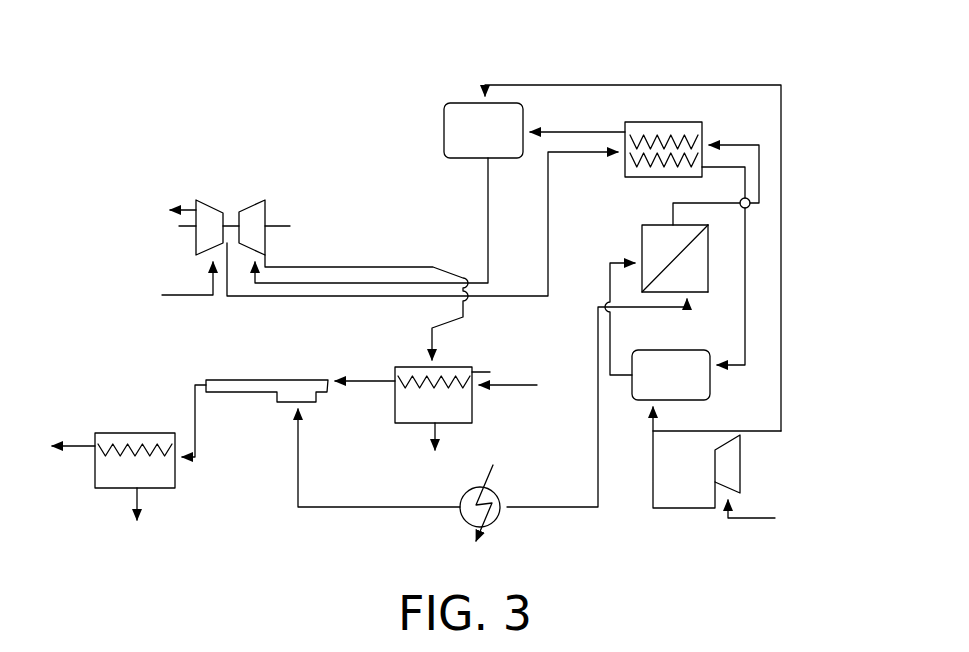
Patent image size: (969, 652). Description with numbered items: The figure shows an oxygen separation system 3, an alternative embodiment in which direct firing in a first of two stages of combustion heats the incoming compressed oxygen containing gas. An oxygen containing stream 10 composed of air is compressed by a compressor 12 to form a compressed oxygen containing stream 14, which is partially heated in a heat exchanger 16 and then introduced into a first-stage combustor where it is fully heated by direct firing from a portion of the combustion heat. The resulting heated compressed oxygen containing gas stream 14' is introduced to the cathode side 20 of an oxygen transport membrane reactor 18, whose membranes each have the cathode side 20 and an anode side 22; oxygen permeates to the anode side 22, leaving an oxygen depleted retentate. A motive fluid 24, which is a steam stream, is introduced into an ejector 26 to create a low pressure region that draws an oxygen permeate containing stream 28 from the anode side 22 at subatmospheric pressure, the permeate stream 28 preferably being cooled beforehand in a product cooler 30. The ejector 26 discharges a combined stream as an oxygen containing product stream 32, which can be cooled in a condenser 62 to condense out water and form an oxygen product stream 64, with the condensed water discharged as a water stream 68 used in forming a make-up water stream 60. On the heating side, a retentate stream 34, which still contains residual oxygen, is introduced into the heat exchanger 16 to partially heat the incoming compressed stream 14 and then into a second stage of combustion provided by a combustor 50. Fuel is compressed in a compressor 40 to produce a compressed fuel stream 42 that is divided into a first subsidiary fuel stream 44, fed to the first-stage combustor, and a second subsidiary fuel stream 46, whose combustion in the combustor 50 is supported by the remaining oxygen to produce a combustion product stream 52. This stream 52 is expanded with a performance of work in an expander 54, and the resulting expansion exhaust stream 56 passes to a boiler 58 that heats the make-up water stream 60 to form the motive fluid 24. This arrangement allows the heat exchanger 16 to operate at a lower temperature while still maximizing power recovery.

The oxygen separation system 3 is at (367, 136).
The oxygen containing stream 10 is at (188, 297).
The compressor 12 is at (210, 213).
The compressed oxygen containing stream 14 is at (422, 248).
The heated compressed oxygen containing gas stream 14' is at (635, 319).
The heat exchanger 16 is at (680, 122).
The oxygen transport membrane reactor 18 is at (642, 237).
The cathode side 20 is at (652, 232).
The anode side 22 is at (705, 263).
The motive fluid 24 is at (363, 378).
The ejector 26 is at (252, 385).
The oxygen permeate containing stream 28 is at (600, 470).
The product cooler 30 is at (465, 522).
The oxygen containing product stream 32 is at (193, 402).
The retentate stream 34 is at (673, 222).
The compressor 40 is at (732, 467).
The compressed fuel stream 42 is at (672, 510).
The first subsidiary fuel stream 44 is at (653, 431).
The second subsidiary fuel stream 46 is at (785, 392).
The combustor 50 is at (458, 120).
The combustion product stream 52 is at (487, 207).
The expander 54 is at (251, 210).
The expansion exhaust stream 56 is at (352, 267).
The boiler 58 is at (403, 425).
The make-up water stream 60 is at (518, 385).
The condenser 62 is at (107, 472).
The oxygen product stream 64 is at (75, 445).
The water stream 68 is at (137, 498).